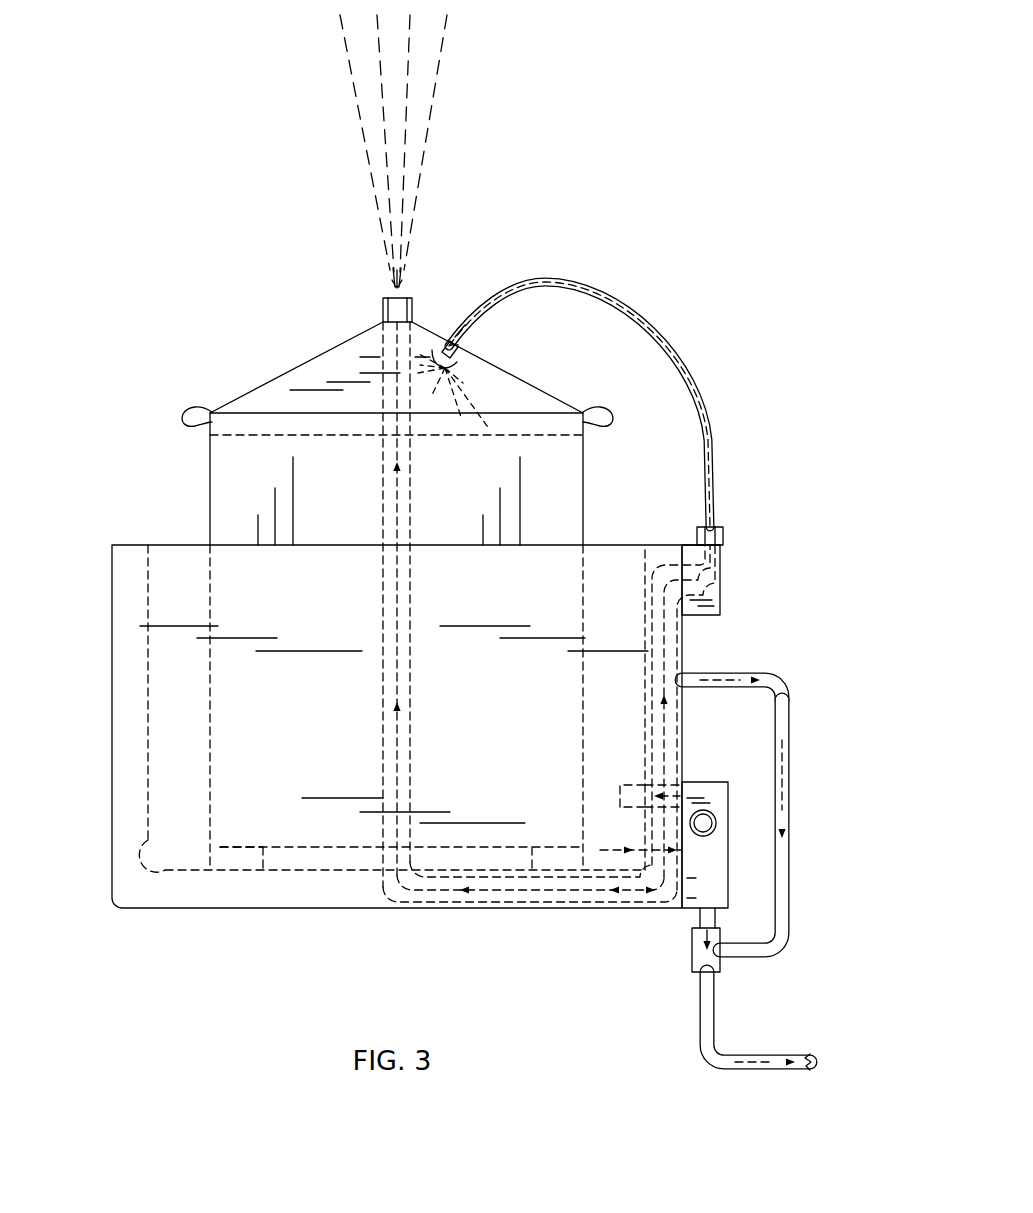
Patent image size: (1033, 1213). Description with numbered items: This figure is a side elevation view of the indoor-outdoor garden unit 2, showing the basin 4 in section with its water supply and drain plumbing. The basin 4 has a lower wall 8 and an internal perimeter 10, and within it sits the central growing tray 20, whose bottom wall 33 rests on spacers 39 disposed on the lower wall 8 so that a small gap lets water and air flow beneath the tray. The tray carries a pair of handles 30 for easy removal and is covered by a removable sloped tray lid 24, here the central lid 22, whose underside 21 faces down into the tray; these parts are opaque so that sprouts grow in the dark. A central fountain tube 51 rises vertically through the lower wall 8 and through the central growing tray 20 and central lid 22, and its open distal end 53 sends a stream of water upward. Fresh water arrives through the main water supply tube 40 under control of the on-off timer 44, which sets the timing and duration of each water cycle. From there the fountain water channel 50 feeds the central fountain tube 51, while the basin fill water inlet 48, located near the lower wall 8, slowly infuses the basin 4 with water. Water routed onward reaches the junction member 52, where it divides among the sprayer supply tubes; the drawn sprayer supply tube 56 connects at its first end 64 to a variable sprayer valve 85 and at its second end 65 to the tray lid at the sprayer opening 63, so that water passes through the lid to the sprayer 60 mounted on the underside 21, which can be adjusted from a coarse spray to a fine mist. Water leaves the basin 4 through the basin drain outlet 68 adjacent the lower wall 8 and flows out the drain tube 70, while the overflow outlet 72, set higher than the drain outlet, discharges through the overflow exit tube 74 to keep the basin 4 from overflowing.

The indoor-outdoor garden unit 2 is at (593, 223).
The basin 4 is at (112, 603).
The lower wall 8 is at (167, 873).
The internal perimeter 10 is at (148, 802).
The central growing tray 20 is at (210, 488).
The underside 21 is at (513, 378).
The central lid 22 is at (302, 388).
The sloped tray lid 24 is at (302, 388).
The handles 30 is at (197, 410).
The bottom wall 33 is at (225, 843).
The spacers 39 is at (250, 868).
The main water supply tube 40 is at (710, 836).
The on-off timer 44 is at (697, 782).
The basin fill water inlet 48 is at (623, 786).
The fountain water channel 50 is at (470, 893).
The central fountain tube 51 is at (412, 306).
The junction member 52 is at (720, 585).
The open distal end 53 is at (383, 298).
The sprayer supply tube 56 is at (607, 300).
The sprayer 60 is at (441, 340).
The sprayer opening 63 is at (472, 327).
The second end 65 is at (457, 345).
The first end 64 is at (718, 527).
The basin drain outlet 68 is at (650, 860).
The drain tube 70 is at (716, 1014).
The overflow outlet 72 is at (652, 684).
The overflow exit tube 74 is at (790, 770).
The variable sprayer valve 85 is at (723, 538).